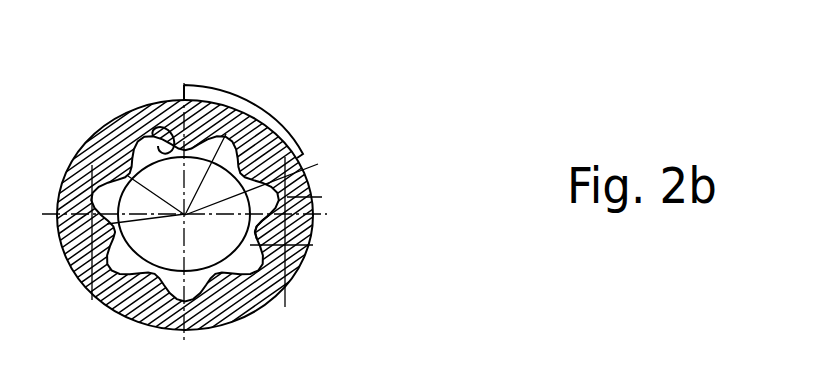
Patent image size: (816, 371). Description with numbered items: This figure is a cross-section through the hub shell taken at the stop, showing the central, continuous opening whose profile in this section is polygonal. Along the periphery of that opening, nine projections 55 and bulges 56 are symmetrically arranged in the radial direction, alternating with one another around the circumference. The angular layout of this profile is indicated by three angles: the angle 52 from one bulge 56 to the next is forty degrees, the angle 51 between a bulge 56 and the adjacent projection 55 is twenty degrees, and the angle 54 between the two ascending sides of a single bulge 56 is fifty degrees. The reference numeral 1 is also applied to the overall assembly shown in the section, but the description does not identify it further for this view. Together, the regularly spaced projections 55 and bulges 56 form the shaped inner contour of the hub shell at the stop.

The gerotor pump 1 is at (335, 185).
The angle between a bulge and the next projection 51 is at (213, 86).
The angle from one bulge to the next 52 is at (293, 120).
The angle between the two ascending sides of a bulge 54 is at (152, 134).
The projections 55 is at (313, 245).
The bulges 56 is at (292, 266).